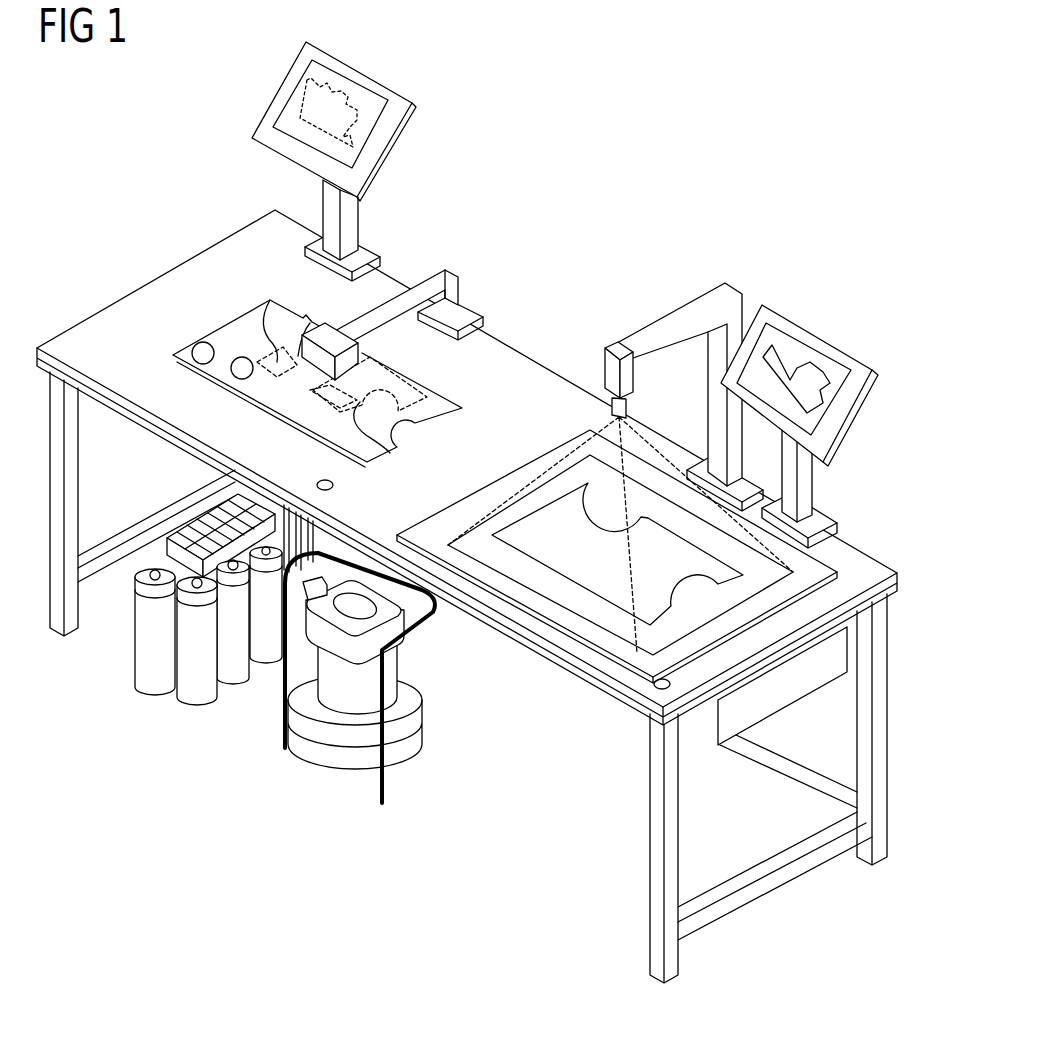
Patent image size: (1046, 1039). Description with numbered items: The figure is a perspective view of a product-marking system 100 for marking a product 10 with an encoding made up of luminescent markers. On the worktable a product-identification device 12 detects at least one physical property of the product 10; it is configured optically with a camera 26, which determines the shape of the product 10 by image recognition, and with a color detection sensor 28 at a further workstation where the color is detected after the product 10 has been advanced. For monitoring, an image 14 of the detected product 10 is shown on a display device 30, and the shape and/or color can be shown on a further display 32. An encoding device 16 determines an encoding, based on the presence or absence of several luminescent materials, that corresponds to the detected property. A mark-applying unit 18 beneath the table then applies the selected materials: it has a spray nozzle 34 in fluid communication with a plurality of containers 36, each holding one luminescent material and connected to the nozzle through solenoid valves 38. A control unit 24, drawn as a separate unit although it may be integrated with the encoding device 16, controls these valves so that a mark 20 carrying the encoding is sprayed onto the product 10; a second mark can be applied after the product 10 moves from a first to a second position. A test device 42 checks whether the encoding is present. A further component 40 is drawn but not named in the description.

The product-marking system 100 is at (481, 510).
The product 10 is at (540, 516).
The product-identification device 12 is at (703, 463).
The image 14 is at (782, 378).
The encoding device 16 is at (833, 655).
The mark-applying unit 18 is at (275, 649).
The mark 20 is at (317, 383).
The control unit 24 is at (308, 600).
The camera 26 is at (611, 348).
The color detection sensor 28 is at (366, 362).
The display device 30 is at (799, 410).
The further display 32 is at (358, 72).
The spray nozzle 34 is at (285, 560).
The containers 36 is at (145, 654).
The solenoid valves 38 is at (172, 548).
The coil base 40 is at (406, 738).
The test device 42 is at (268, 336).